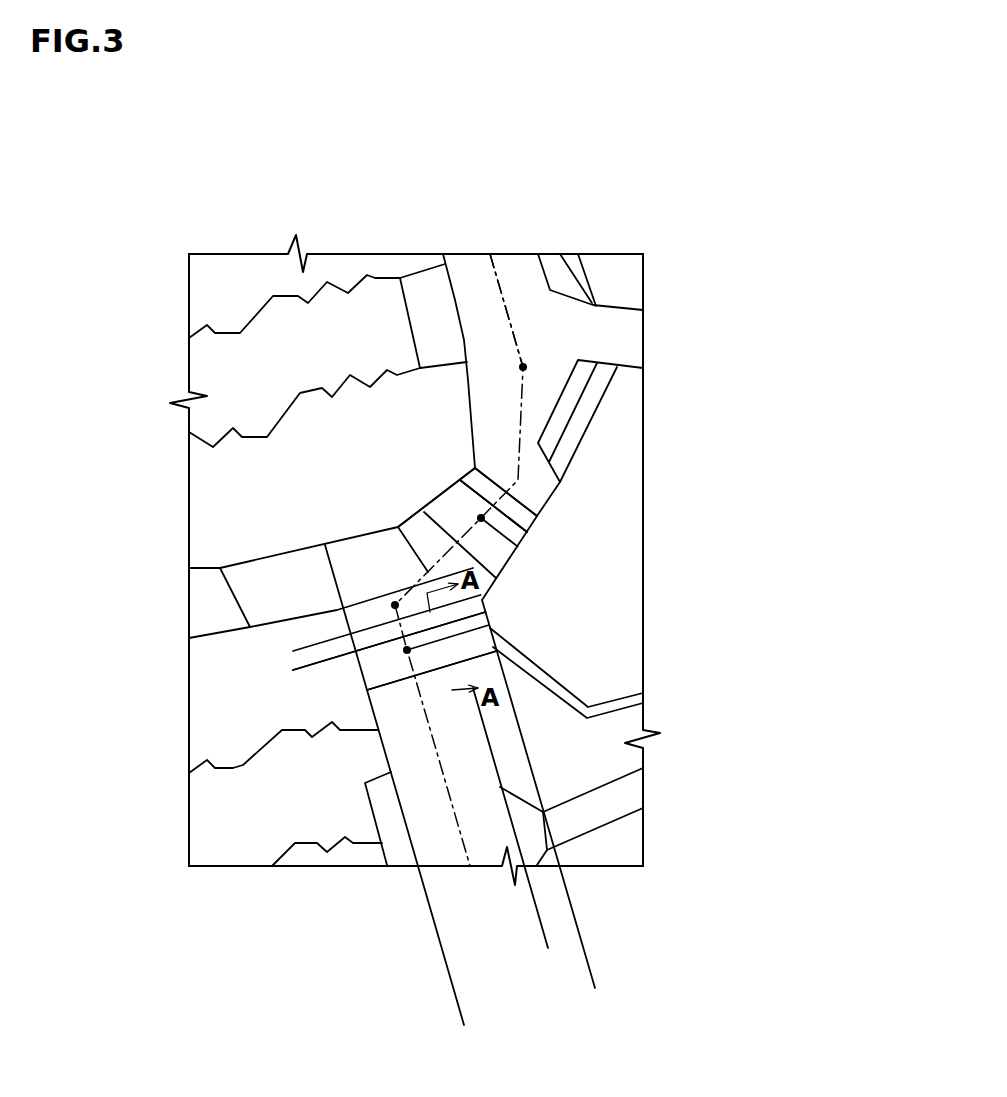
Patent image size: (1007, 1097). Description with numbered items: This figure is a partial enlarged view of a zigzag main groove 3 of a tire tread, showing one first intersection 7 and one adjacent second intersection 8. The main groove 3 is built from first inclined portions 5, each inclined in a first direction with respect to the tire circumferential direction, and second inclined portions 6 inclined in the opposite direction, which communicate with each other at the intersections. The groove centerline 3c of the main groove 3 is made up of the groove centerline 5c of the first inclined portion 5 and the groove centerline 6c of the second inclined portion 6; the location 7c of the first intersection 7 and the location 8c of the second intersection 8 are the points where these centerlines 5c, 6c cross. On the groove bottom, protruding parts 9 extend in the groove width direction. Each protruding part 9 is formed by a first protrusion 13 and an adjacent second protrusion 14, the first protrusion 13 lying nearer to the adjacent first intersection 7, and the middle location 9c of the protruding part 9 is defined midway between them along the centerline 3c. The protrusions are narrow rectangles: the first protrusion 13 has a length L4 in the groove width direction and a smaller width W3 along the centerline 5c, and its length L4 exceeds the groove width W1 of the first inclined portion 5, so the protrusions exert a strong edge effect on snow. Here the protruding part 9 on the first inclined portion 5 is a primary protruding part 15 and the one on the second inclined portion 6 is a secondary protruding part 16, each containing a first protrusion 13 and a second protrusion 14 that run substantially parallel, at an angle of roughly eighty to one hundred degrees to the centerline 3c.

The main groove 3 is at (518, 280).
The groove centerline of the main groove 3c is at (296, 596).
The first inclined portion 5 is at (442, 785).
The groove centerline of the first inclined portion 5c is at (403, 771).
The second inclined portion 6 is at (537, 405).
The groove centerline of the second inclined portion 6c is at (201, 486).
The first intersection 7 is at (303, 553).
The location of the first intersection 7c is at (395, 605).
The second intersection 8 is at (510, 365).
The location of the second intersection 8c is at (525, 365).
The protruding part 9 is at (554, 572).
The middle location of the protruding part 9c is at (300, 469).
The first protrusion 13 is at (485, 555).
The second protrusion 14 is at (515, 515).
The primary protruding part 15 is at (725, 583).
The secondary protruding part 16 is at (725, 455).
The groove width of the first inclined portion W1 is at (547, 945).
The width of the first protrusion W3 is at (209, 660).
The length of the first protrusion L4 is at (593, 987).